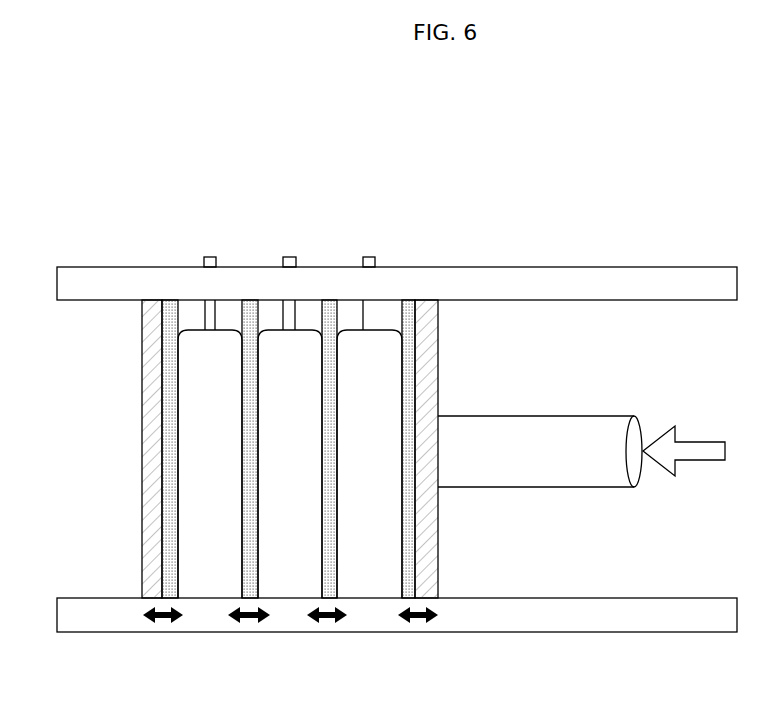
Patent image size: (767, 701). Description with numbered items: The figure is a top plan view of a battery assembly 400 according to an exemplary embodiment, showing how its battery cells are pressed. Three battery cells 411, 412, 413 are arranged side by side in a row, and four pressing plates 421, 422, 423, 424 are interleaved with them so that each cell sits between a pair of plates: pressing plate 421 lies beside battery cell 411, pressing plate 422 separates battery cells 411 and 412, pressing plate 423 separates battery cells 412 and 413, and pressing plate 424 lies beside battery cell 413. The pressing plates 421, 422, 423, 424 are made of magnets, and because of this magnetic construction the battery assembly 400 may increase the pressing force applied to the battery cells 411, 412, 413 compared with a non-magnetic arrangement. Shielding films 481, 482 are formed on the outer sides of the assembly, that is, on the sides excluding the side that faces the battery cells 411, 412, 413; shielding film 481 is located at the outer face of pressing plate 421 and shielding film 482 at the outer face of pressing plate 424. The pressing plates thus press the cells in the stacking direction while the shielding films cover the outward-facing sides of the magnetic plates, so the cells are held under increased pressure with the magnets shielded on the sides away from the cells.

The battery assembly 400 is at (373, 113).
The battery cell 411 is at (205, 585).
The battery cell 412 is at (285, 585).
The battery cell 413 is at (377, 585).
The pressing plate 421 is at (173, 310).
The pressing plate 422 is at (252, 310).
The pressing plate 423 is at (330, 310).
The pressing plate 424 is at (405, 310).
The shielding film 481 is at (150, 372).
The shielding film 482 is at (438, 337).